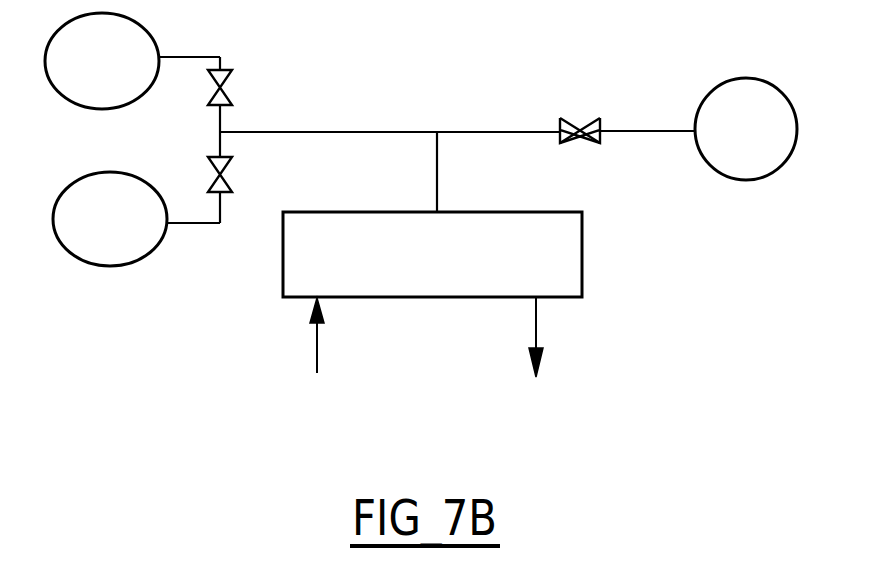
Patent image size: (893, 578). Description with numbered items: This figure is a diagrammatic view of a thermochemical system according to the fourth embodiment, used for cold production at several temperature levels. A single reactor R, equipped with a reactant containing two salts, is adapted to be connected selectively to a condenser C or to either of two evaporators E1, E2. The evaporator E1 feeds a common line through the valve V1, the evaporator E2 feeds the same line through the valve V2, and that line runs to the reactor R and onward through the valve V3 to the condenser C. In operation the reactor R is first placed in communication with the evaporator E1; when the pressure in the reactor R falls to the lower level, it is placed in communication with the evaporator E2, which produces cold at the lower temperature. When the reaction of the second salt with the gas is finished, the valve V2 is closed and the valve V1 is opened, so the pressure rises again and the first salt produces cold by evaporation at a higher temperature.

The evaporator E1 is at (102, 61).
The evaporator E2 is at (110, 219).
The valve V1 is at (218, 94).
The valve V2 is at (222, 177).
The valve V3 is at (627, 108).
The reactor R is at (432, 214).
The condenser C is at (746, 129).